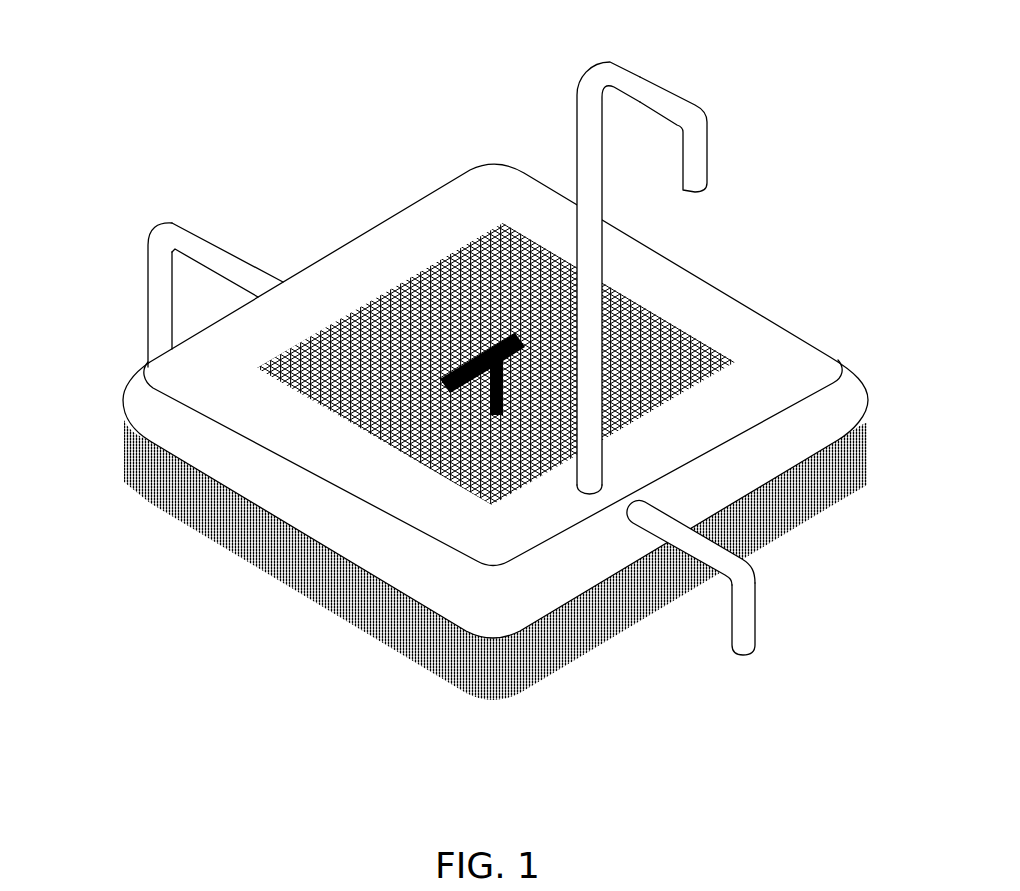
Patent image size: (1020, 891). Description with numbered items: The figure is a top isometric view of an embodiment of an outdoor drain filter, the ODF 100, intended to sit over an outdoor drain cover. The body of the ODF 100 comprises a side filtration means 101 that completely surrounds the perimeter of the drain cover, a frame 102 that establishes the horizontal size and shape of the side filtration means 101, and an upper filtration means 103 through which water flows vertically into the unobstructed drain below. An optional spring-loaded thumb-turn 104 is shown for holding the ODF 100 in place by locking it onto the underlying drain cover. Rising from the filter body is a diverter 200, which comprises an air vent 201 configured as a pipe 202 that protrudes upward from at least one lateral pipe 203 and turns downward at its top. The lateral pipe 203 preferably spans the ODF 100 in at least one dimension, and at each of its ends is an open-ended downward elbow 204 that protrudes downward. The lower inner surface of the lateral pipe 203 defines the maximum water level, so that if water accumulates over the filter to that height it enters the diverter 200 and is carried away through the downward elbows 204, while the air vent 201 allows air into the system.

The ODF 100 is at (493, 421).
The side filtration means 101 is at (870, 452).
The frame 102 is at (850, 385).
The upper filtration means 103 is at (663, 345).
The spring-loaded thumb-turn 104 is at (413, 243).
The diverter 200 is at (461, 334).
The air vent 201 is at (710, 177).
The pipe 202 is at (571, 222).
The lateral pipe 203 is at (230, 247).
The downward elbow 204 is at (148, 288).